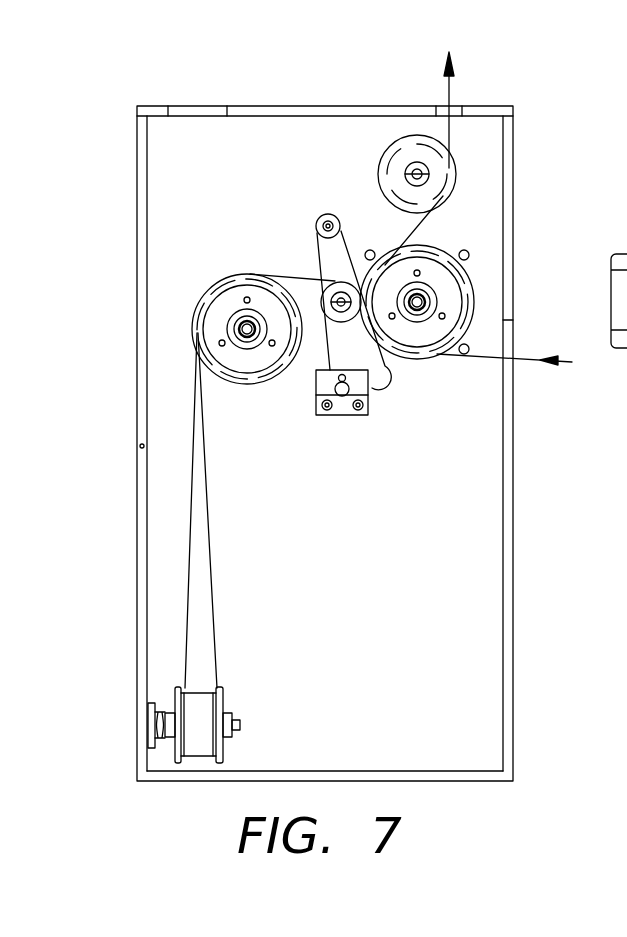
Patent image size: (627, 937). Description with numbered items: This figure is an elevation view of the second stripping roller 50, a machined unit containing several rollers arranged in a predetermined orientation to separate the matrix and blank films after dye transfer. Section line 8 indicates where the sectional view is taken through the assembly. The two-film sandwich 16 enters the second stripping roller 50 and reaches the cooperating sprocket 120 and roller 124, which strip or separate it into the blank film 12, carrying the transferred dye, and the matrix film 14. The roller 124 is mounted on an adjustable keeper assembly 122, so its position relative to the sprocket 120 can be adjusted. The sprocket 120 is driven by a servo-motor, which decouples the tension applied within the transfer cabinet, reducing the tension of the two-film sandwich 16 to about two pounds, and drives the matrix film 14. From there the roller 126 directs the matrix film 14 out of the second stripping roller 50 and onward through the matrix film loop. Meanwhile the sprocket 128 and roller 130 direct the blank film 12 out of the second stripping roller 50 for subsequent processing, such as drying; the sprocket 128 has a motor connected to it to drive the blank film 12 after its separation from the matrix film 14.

The section line 8- 8 is at (108, 449).
The blank film 12 is at (200, 643).
The matrix film 14 is at (449, 92).
The two-film sandwich 16 is at (522, 357).
The second stripping roller 50 is at (520, 597).
The sprocket 120 is at (432, 250).
The adjustable keeper assembly 122 is at (363, 353).
The roller 124 is at (322, 292).
The roller 126 is at (456, 172).
The sprocket 128 is at (212, 283).
The roller 130 is at (175, 700).